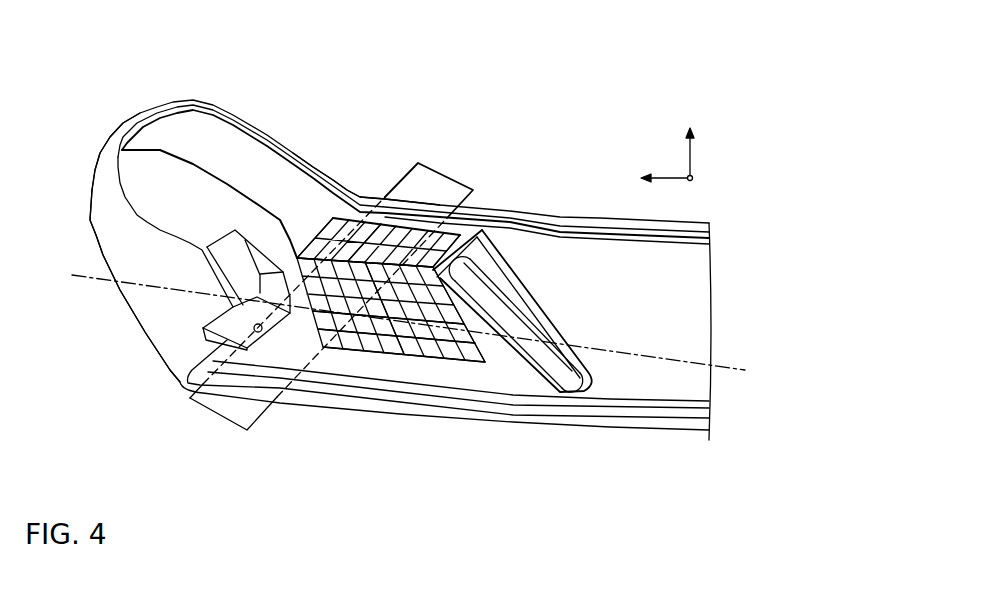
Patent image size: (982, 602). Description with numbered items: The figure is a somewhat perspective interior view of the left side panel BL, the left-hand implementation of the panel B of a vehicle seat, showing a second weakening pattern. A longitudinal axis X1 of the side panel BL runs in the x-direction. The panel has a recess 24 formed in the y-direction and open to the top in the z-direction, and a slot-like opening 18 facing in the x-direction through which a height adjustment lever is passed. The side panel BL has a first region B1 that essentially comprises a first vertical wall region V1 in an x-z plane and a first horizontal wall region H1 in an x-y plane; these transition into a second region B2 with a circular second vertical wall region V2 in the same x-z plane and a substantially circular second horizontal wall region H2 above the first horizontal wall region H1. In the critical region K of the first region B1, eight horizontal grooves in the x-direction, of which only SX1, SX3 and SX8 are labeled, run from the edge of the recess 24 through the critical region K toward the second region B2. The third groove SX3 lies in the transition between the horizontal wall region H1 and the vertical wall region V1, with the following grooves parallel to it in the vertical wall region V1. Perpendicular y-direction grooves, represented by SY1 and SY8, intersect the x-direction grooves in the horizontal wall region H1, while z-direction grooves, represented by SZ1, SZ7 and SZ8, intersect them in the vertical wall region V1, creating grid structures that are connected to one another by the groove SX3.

The panel B is at (147, 331).
The left panel BL is at (147, 331).
The first region B1 is at (360, 367).
The second region B2 is at (173, 63).
The first horizontal wall region H1 is at (356, 198).
The second horizontal wall region H2 is at (106, 170).
The first vertical wall region V1 is at (415, 372).
The second vertical wall region V2 is at (157, 178).
The critical region K is at (310, 361).
The first horizontal indentation SX1 is at (333, 218).
The third horizontal groove SX3 is at (383, 264).
The eighth horizontal indentation SX8 is at (485, 363).
The first y-direction indentation SY1 is at (315, 226).
The eighth y-direction indentation SY8 is at (450, 243).
The first vertical groove SZ1 is at (297, 258).
The seventh vertical groove SZ7 is at (463, 345).
The eighth vertical groove SZ8 is at (467, 327).
The slot-like opening 18 is at (525, 358).
The recess 24 is at (525, 295).
The longitudinal axis X1 is at (577, 376).